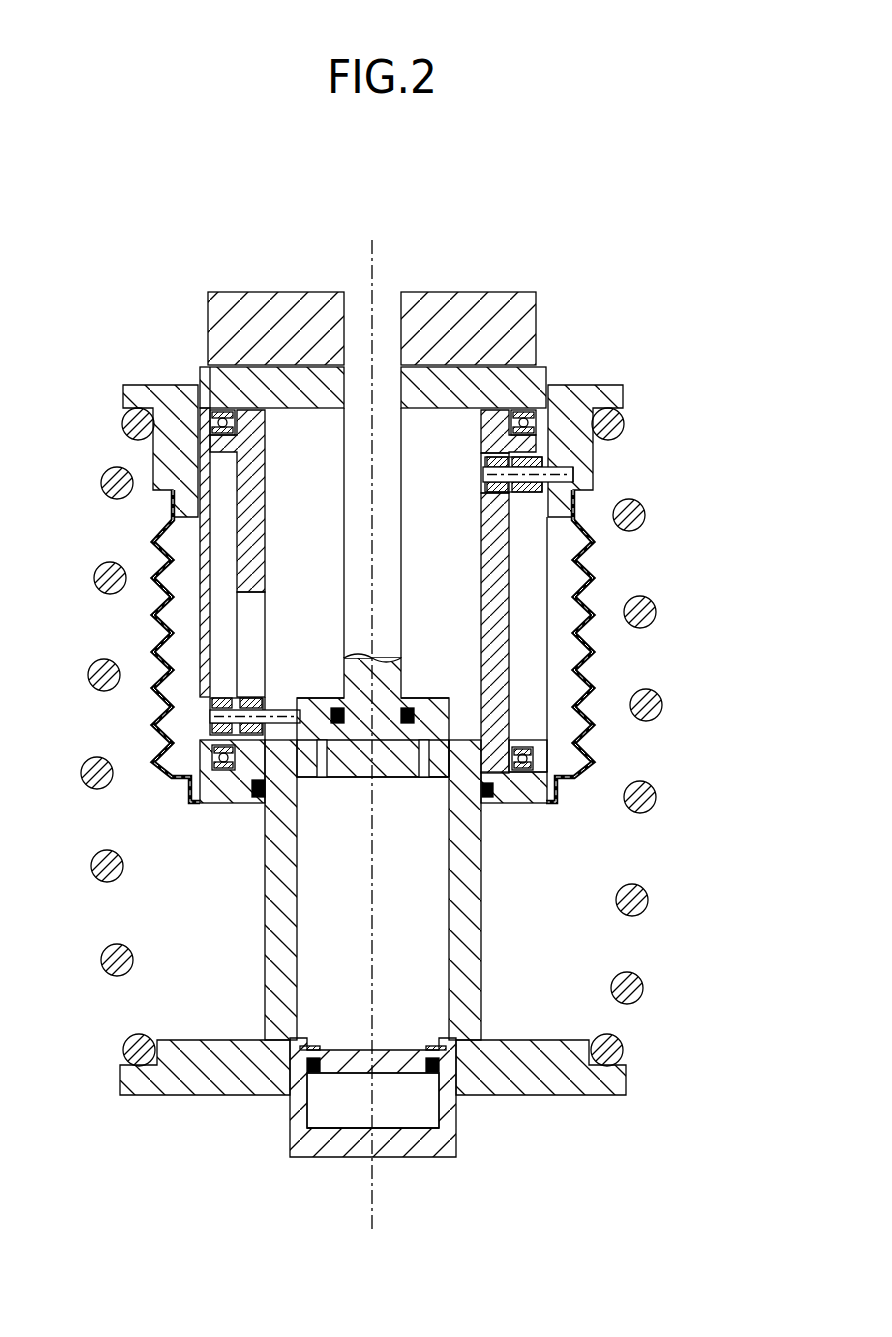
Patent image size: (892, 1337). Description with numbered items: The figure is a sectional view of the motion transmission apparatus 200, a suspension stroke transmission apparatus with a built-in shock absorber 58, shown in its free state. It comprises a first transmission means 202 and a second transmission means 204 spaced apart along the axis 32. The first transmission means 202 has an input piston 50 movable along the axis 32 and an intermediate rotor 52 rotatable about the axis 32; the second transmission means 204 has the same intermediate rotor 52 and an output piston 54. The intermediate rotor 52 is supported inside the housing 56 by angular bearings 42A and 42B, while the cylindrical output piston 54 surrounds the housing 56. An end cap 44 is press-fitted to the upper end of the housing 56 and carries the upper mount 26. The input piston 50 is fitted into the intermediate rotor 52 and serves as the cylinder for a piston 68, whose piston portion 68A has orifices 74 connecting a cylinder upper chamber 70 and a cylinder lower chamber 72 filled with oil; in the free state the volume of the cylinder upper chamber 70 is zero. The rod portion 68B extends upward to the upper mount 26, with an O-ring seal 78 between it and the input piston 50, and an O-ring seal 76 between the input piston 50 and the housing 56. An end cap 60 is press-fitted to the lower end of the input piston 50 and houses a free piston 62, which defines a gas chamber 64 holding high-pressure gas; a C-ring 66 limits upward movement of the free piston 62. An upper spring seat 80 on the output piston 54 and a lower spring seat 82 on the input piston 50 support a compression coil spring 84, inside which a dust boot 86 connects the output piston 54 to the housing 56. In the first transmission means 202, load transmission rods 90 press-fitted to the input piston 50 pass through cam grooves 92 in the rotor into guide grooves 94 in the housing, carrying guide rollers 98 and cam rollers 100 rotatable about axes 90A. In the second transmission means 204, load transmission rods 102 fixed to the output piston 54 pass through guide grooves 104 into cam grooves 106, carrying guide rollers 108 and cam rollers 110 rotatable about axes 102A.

The motion transmission apparatus 200 is at (590, 350).
The upper mount 26 is at (287, 300).
The axis 32 is at (370, 268).
The end cap 44 is at (457, 375).
The housing 56 is at (208, 372).
The output piston 54 is at (170, 395).
The upper spring seat 80 is at (610, 401).
The angular bearing 42B is at (215, 427).
The cam roller 110 is at (515, 428).
The load transmission rod 102 is at (567, 463).
The axis of load transmission rod 102A is at (583, 493).
The rod portion 68B is at (345, 497).
The intermediate rotor 52 is at (245, 536).
The guide roller 108 is at (520, 490).
The second transmission means 204 is at (530, 513).
The cam groove 106 is at (496, 558).
The dust boot 86 is at (592, 592).
The cam groove 92 is at (248, 598).
The guide groove 94 is at (222, 593).
The cam roller 100 is at (255, 698).
The guide roller 98 is at (223, 697).
The load transmission rod 90 is at (287, 700).
The O-ring seal 78 is at (407, 700).
The guide groove 104 is at (528, 663).
The axis of load transmission rod 90A is at (210, 716).
The first transmission means 202 is at (190, 722).
The compression coil spring 84 is at (657, 797).
The angular bearing 42A is at (200, 767).
The O-ring seal 76 is at (252, 787).
The piston portion 68A is at (348, 775).
The cylinder upper chamber 70 is at (423, 775).
The orifice 74 is at (457, 775).
The input piston 50 is at (470, 890).
The shock absorber 58 is at (258, 876).
The cylinder lower chamber 72 is at (457, 948).
The C-ring 66 is at (313, 1045).
The free piston 62 is at (407, 1072).
The lower spring seat 82 is at (620, 1078).
The gas chamber 64 is at (328, 1122).
The end cap 60 is at (423, 1150).
The piston 68 is at (383, 285).